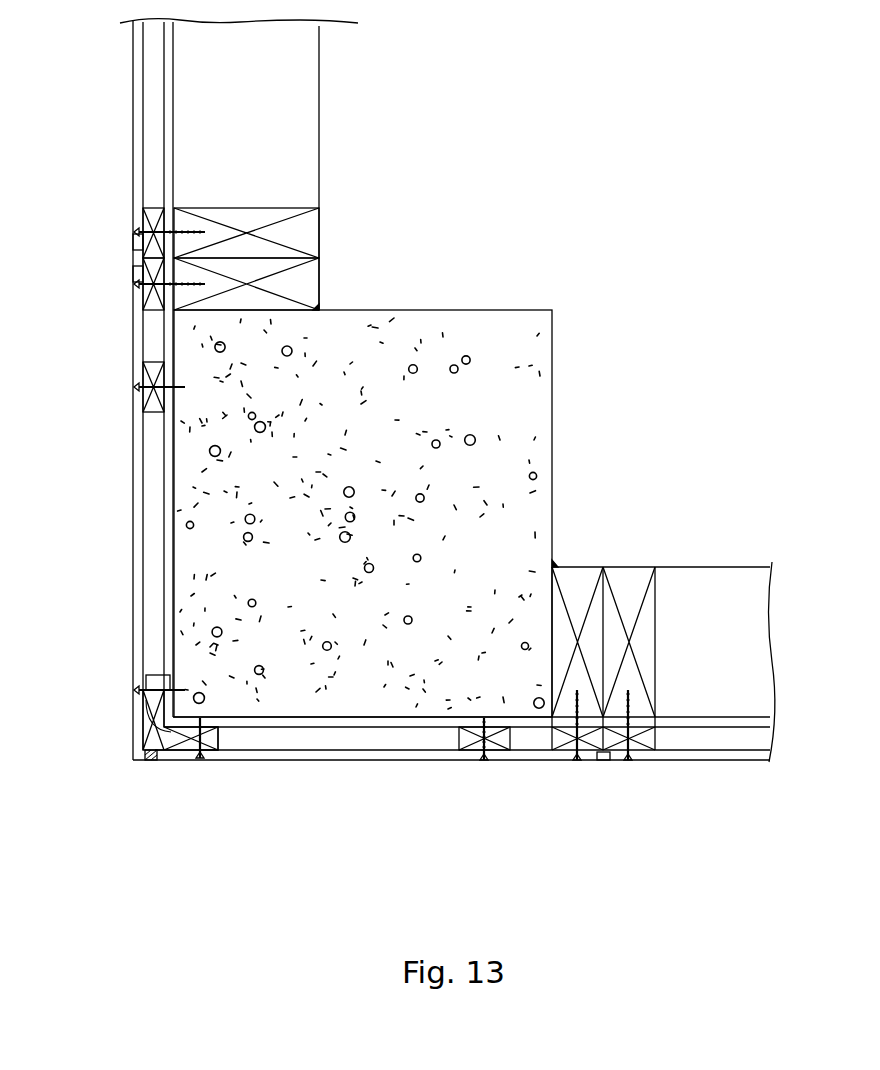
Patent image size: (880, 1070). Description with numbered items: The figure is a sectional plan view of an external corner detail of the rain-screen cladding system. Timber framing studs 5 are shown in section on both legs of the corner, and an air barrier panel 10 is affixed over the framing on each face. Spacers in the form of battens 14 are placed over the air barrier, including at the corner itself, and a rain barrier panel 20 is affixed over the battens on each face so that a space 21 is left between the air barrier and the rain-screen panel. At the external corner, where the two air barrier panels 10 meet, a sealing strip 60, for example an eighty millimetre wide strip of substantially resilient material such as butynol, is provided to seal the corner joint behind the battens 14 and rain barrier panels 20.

The stud 5 is at (635, 601).
The air barrier panel 10 is at (687, 720).
The batten 14 is at (148, 706).
The rain barrier panel 20 is at (406, 758).
The space 21 is at (383, 751).
The sealing strip 60 is at (148, 757).